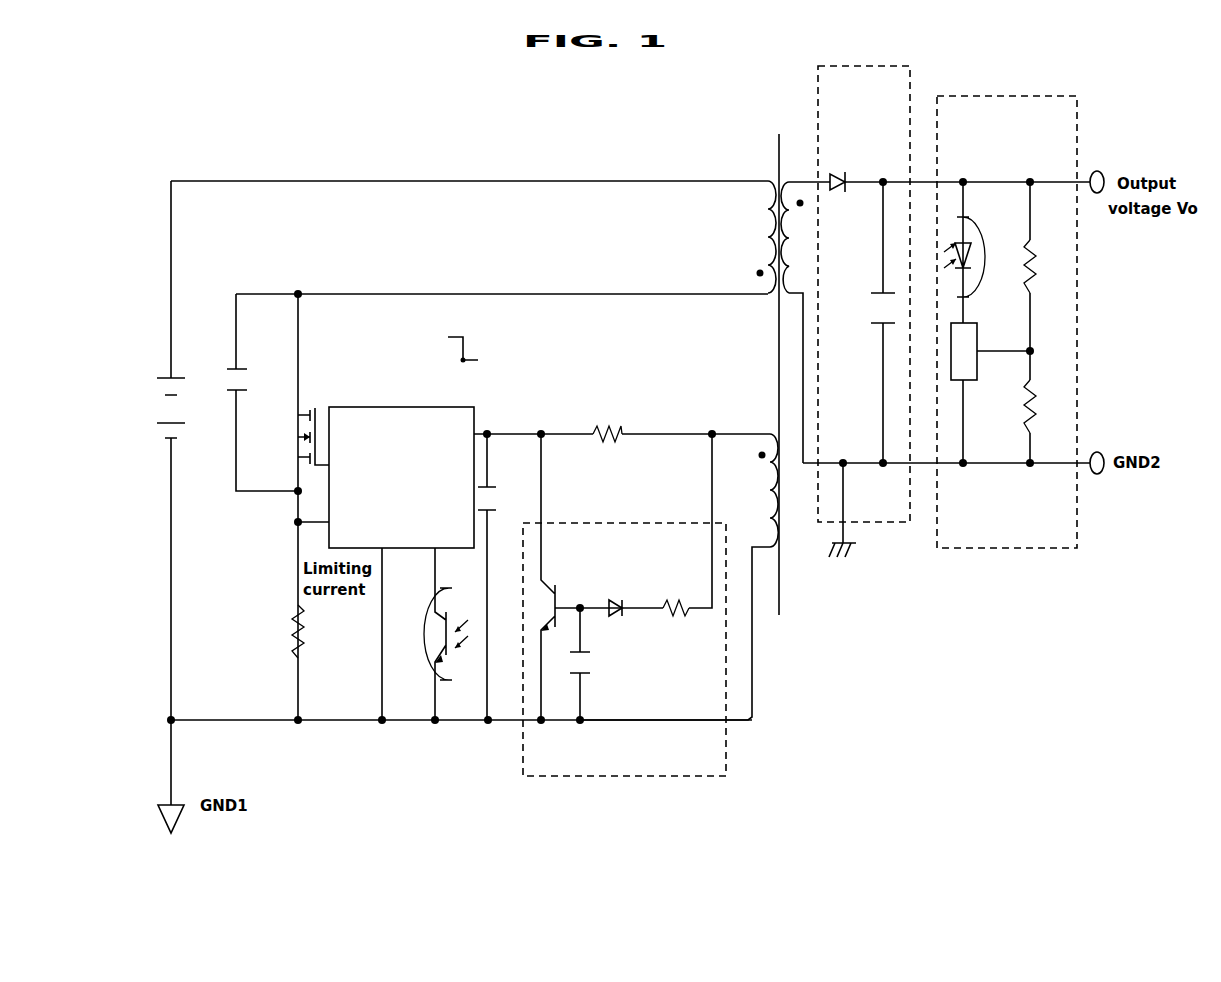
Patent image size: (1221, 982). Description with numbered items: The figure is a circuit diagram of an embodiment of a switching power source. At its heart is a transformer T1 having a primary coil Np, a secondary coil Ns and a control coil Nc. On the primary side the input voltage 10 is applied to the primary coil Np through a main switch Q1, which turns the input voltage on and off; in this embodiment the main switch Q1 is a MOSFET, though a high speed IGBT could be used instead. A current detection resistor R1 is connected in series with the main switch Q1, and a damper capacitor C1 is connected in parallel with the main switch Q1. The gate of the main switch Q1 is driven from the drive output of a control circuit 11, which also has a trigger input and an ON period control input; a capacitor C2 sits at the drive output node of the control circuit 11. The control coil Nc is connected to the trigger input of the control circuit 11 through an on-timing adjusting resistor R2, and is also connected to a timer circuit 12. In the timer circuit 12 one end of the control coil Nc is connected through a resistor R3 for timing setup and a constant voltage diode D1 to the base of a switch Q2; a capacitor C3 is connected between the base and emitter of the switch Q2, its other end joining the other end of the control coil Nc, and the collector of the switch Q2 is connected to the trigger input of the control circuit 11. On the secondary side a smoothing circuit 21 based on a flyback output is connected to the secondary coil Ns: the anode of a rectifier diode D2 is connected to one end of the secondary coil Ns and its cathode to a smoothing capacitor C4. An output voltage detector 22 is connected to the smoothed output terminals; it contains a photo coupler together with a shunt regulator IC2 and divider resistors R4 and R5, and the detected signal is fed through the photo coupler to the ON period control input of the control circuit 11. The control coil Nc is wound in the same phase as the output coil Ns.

The input voltage 10 is at (170, 424).
The control circuit 11 is at (420, 521).
The timer circuit 12 is at (624, 629).
The smoothing circuit 21 is at (929, 297).
The output voltage detector 22 is at (1007, 348).
The damper capacitor C1 is at (260, 366).
The main switch Q1 is at (295, 507).
The current detection resistor R1 is at (283, 631).
The capacitor C2 is at (498, 577).
The on-timing adjusting resistor R2 is at (607, 412).
The switch Q2 is at (560, 577).
The constant voltage diode D1 is at (621, 579).
The resistor for timing setup R3 is at (686, 525).
The capacitor C3 is at (594, 664).
The transformer T1 is at (705, 401).
The primary coil Np is at (754, 237).
The secondary coil Ns is at (805, 322).
The control coil Nc is at (679, 577).
The rectifier diode D2 is at (842, 161).
The smoothing capacitor C4 is at (872, 322).
The shunt regulator IC2 is at (990, 412).
The resistor R4 is at (1044, 281).
The resistor R5 is at (1044, 421).